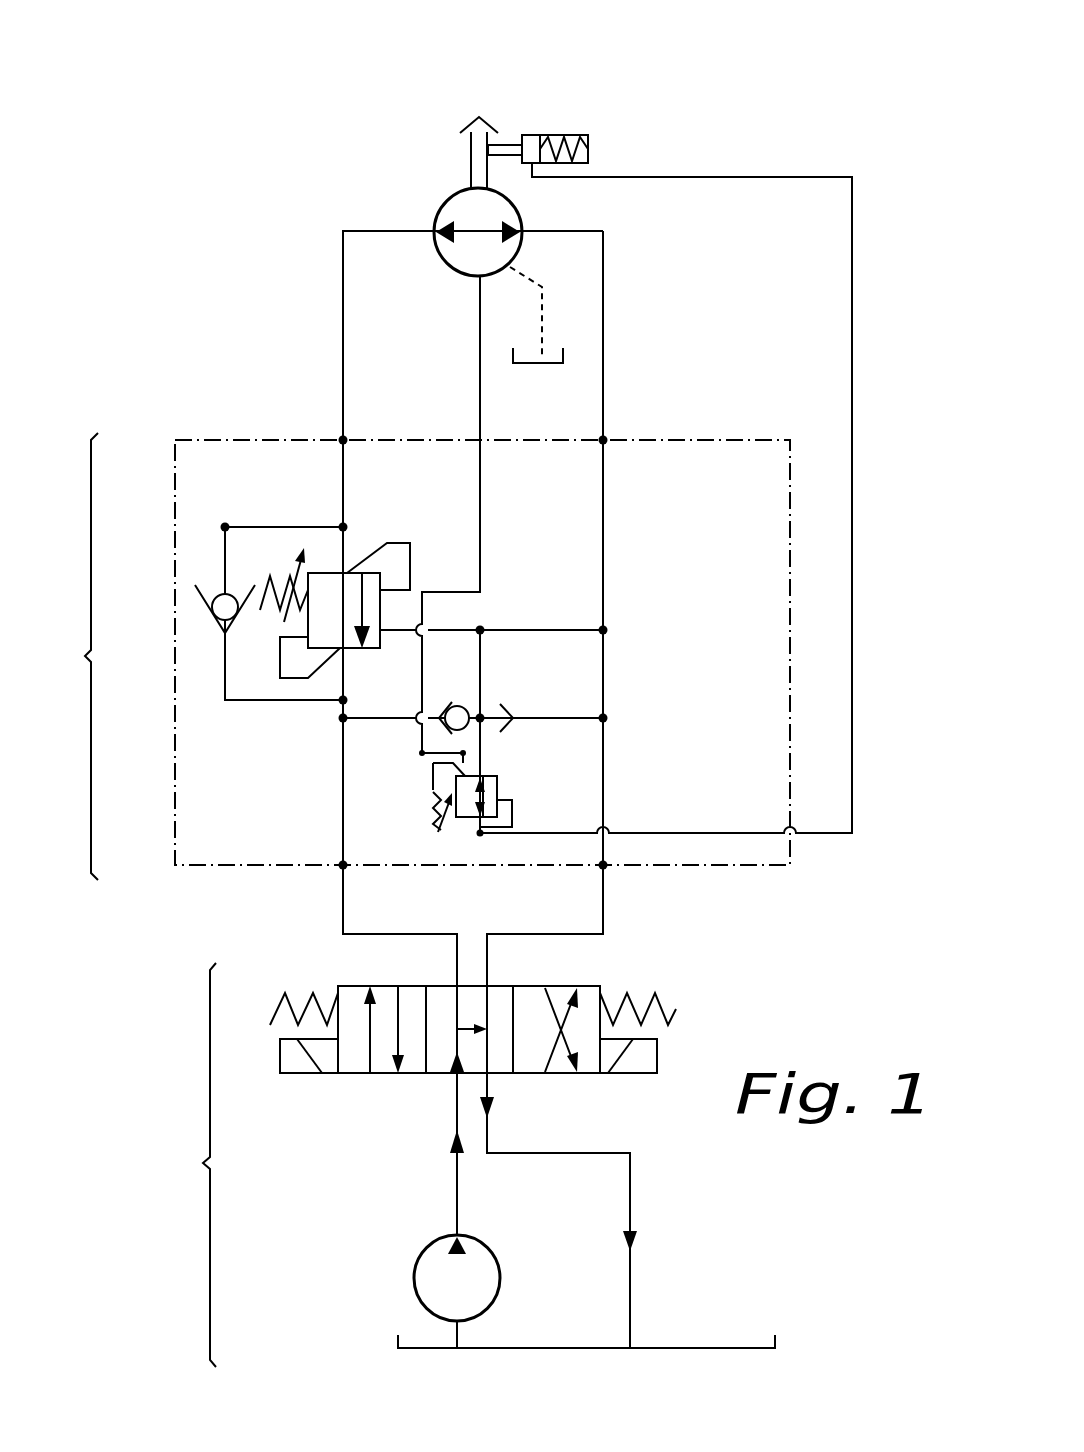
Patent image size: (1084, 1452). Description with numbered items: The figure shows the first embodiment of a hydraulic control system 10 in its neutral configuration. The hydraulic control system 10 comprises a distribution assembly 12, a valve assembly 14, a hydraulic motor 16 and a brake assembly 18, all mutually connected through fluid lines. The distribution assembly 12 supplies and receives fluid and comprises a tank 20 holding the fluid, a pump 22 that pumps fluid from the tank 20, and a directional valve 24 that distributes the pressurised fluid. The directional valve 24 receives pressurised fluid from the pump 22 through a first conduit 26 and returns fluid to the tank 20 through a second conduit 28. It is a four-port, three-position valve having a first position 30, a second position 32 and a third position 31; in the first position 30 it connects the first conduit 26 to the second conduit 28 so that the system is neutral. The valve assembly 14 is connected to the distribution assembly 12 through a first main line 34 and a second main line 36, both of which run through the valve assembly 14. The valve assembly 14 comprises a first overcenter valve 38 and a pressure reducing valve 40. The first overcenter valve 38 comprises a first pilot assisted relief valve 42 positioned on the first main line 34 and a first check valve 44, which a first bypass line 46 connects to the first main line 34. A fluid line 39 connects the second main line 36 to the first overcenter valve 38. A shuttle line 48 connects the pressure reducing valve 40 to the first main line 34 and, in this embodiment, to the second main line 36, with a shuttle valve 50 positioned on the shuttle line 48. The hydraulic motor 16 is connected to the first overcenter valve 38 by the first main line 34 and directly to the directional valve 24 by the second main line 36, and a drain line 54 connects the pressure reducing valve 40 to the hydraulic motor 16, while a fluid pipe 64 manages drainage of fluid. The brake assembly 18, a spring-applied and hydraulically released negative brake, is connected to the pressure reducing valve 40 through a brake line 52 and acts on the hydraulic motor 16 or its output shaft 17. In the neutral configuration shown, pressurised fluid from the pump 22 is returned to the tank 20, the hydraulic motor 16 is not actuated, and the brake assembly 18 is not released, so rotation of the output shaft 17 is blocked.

The hydraulic control system 10 is at (178, 159).
The distribution assembly 12 is at (188, 1165).
The valve assembly 14 is at (416, 656).
The hydraulic motor 16 is at (428, 183).
The output shaft 17 is at (470, 155).
The brake assembly 18 is at (526, 114).
The tank 20 is at (775, 1344).
The pump 22 is at (414, 1270).
The directional valve 24 is at (692, 1002).
The first conduit 26 is at (457, 1201).
The second conduit 28 is at (630, 1190).
The first position 30 is at (443, 1073).
The third position 31 is at (553, 986).
The second position 32 is at (385, 986).
The first main line 34 is at (343, 314).
The second main line 36 is at (603, 348).
The first overcenter valve 38 is at (224, 492).
The fluid line 39 is at (547, 630).
The pressure reducing valve 40 is at (513, 815).
The first pilot assisted relief valve 42 is at (372, 650).
The first check valve 44 is at (208, 609).
The first bypass line 46 is at (287, 526).
The shuttle line 48 is at (555, 717).
The shuttle valve 50 is at (514, 704).
The brake line 52 is at (852, 237).
The drain line 54 is at (480, 348).
The fluid pipe 64 is at (532, 282).